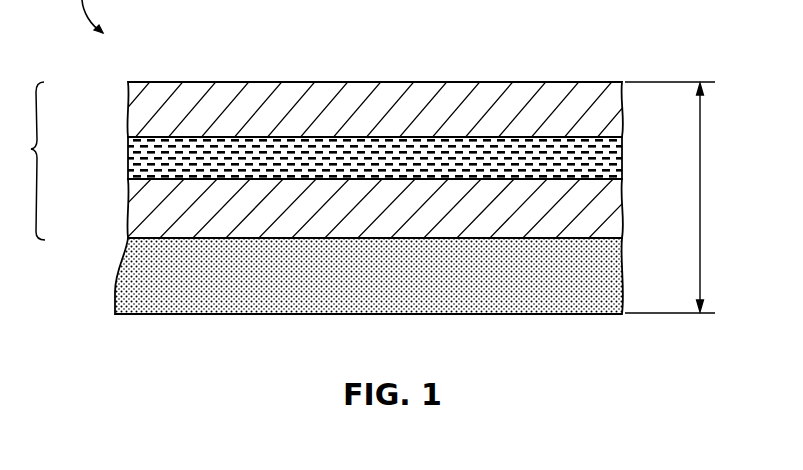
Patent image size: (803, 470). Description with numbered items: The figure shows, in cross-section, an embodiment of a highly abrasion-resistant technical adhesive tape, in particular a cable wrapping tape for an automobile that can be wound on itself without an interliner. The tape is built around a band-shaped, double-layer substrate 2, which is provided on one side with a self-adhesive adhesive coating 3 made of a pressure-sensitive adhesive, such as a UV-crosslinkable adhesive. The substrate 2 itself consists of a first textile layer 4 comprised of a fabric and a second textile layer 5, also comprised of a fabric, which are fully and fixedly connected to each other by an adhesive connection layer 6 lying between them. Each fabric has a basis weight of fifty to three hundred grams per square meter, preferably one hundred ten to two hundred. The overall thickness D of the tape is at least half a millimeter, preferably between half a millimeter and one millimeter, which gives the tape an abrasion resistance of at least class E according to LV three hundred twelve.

The substrate 2 is at (40, 150).
The adhesive coating 3 is at (170, 278).
The first textile layer 4 is at (153, 111).
The second textile layer 5 is at (163, 213).
The adhesive connection layer 6 is at (126, 160).
The thickness D is at (703, 200).